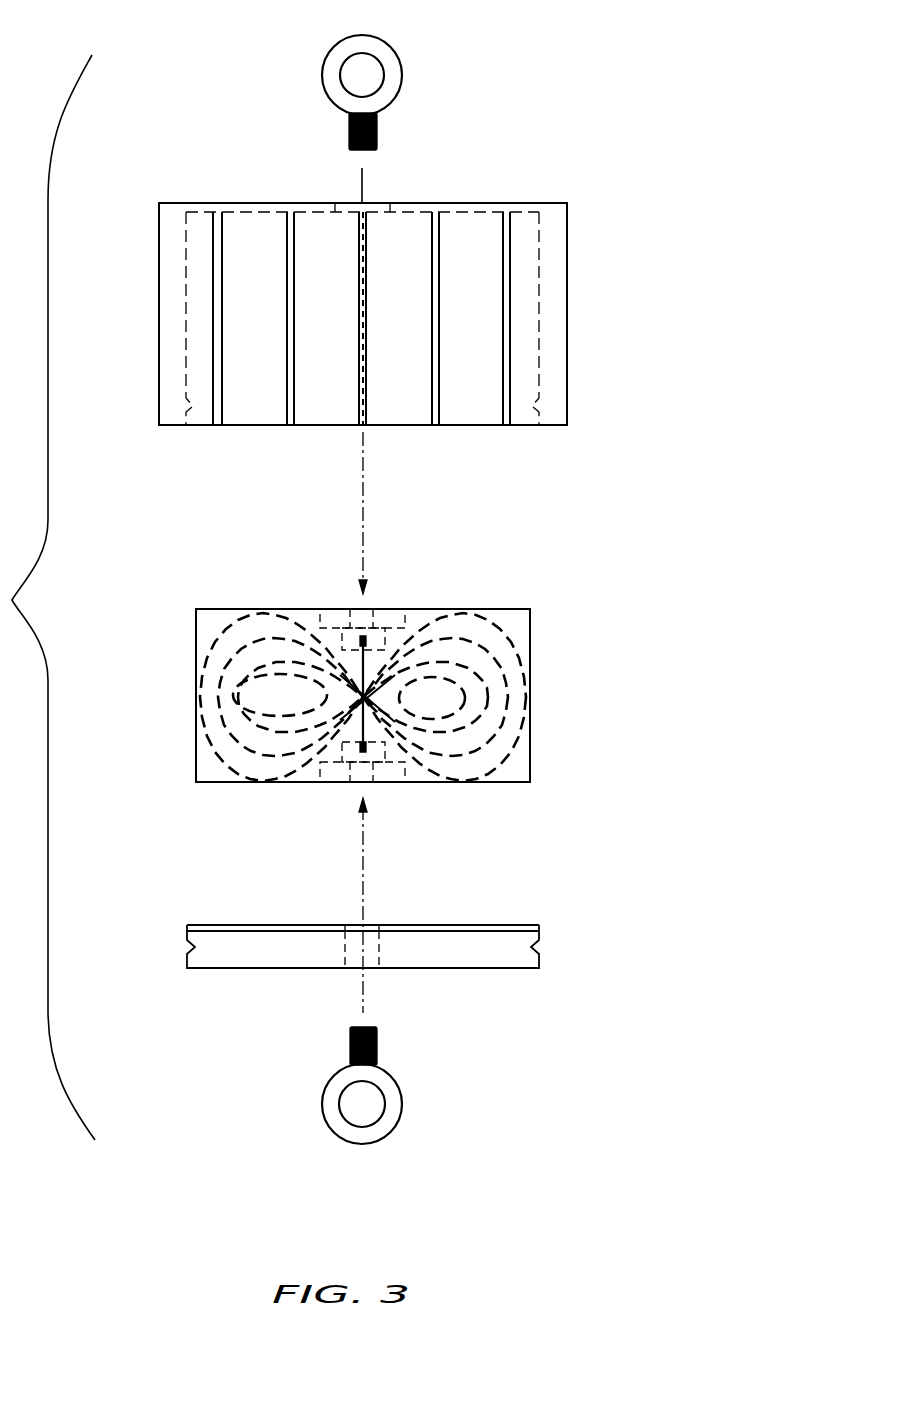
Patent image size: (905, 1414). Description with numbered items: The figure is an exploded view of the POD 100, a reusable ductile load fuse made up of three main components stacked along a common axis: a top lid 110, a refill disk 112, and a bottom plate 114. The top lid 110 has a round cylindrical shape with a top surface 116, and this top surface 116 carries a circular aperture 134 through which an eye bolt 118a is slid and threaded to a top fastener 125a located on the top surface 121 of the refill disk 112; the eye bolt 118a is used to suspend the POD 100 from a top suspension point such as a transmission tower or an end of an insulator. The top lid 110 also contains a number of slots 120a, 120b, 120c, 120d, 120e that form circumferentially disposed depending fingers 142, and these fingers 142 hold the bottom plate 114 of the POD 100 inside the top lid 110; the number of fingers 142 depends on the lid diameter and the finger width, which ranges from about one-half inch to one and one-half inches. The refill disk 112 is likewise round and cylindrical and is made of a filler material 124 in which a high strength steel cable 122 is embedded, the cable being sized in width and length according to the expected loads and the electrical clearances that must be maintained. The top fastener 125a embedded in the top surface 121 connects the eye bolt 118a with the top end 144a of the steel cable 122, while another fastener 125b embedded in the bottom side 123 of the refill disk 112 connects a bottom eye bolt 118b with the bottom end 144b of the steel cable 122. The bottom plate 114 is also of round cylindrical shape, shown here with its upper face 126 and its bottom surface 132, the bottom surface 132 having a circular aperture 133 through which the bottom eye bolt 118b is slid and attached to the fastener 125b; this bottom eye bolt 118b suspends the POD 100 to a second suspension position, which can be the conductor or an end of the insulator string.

The POD 100 is at (660, 148).
The top lid 110 is at (567, 306).
The refill disk 112 is at (388, 698).
The bottom plate 114 is at (402, 953).
The top surface 116 is at (497, 203).
The eye bolt 118a is at (388, 57).
The bottom eye bolt 118b is at (397, 1118).
The slot 120a is at (218, 427).
The slot 120b is at (293, 427).
The slot 120c is at (363, 427).
The slot 120d is at (437, 427).
The slot 120e is at (508, 427).
The top surface 121 is at (237, 608).
The steel cable 122 is at (513, 647).
The bottom side 123 is at (237, 782).
The filler material 124 is at (428, 623).
The top fastener 125a is at (343, 610).
The fastener 125b is at (330, 773).
The base plate top surface 126 is at (243, 930).
The bottom surface 132 is at (290, 968).
The circular aperture 133 is at (372, 962).
The circular aperture 134 is at (373, 210).
The fingers 142 is at (480, 427).
The top end 144a is at (363, 640).
The bottom end 144b is at (363, 747).